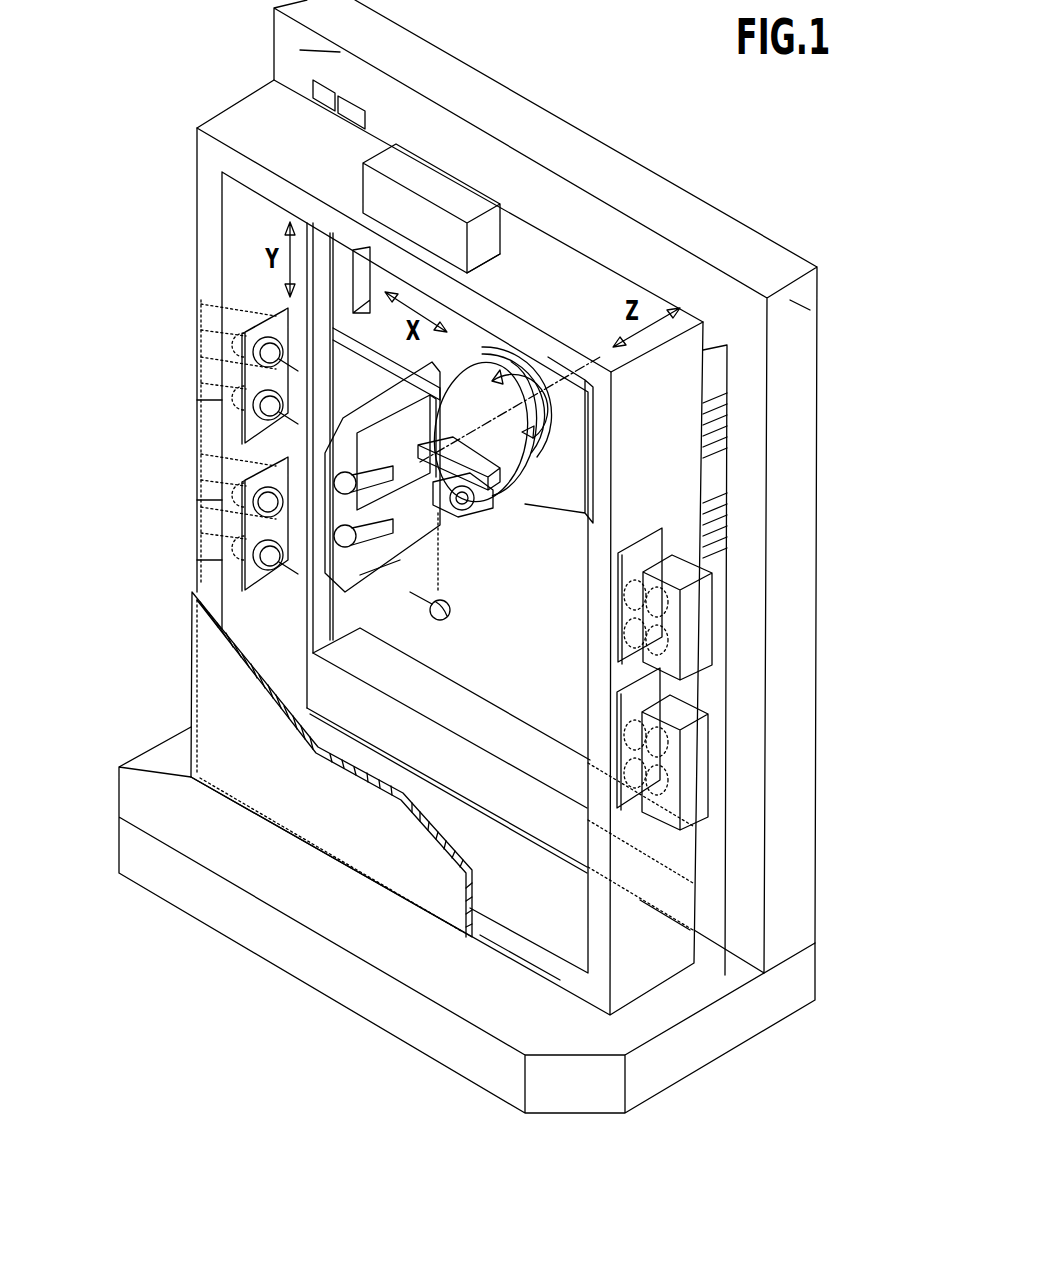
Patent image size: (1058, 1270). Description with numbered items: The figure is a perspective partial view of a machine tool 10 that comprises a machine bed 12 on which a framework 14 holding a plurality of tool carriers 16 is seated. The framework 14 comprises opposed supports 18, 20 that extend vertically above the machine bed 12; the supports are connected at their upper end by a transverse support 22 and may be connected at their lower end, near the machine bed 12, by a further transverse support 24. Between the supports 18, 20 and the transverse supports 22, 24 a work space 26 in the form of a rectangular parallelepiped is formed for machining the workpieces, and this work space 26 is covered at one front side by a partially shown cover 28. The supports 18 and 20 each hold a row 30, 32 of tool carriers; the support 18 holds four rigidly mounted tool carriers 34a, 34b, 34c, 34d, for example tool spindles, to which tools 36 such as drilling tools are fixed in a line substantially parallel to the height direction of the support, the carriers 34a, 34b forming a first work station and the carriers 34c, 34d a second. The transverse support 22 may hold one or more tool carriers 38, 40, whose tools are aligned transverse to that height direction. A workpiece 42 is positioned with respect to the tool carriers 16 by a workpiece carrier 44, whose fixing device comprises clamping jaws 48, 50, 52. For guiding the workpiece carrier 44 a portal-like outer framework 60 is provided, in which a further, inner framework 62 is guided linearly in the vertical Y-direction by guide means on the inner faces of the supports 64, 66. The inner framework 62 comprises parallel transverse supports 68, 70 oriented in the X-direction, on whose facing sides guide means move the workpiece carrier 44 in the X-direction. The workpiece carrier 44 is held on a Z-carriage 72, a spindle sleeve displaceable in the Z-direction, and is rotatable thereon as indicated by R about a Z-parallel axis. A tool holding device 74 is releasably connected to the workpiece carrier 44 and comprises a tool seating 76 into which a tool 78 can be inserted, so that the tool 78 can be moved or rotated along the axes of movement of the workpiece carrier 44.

The machine tool 10 is at (190, 428).
The machine bed 12 is at (647, 1008).
The framework 14 is at (675, 917).
The tool carriers 16 is at (262, 355).
The support 18 is at (210, 577).
The support 20 is at (650, 881).
The transverse support 22 is at (262, 120).
The further transverse support 24 is at (513, 960).
The work space 26 is at (539, 700).
The cover 28 is at (340, 813).
The row of tool carriers 30 is at (190, 513).
The row of tool carriers 32 is at (693, 548).
The tool carrier 34a is at (243, 343).
The tool carrier 34b is at (240, 393).
The tool carrier 34c is at (240, 480).
The tool carrier 34d is at (240, 540).
The tools 36 is at (305, 345).
The tool carrier 38 is at (485, 262).
The tool carrier 40 is at (517, 180).
The workpiece 42 is at (398, 578).
The workpiece carrier 44 is at (580, 513).
The clamping jaw 48 is at (363, 627).
The clamping jaw 50 is at (343, 417).
The clamping jaw 52 is at (450, 540).
The framework 60 is at (683, 200).
The further framework 62 is at (360, 267).
The support 64 is at (296, 50).
The support 66 is at (803, 310).
The transverse support 68 is at (712, 513).
The transverse support 70 is at (722, 405).
The Z-carriage 72 is at (585, 472).
The tool holding device 74 is at (490, 500).
The tool seating 76 is at (467, 520).
The tool 78 is at (450, 614).